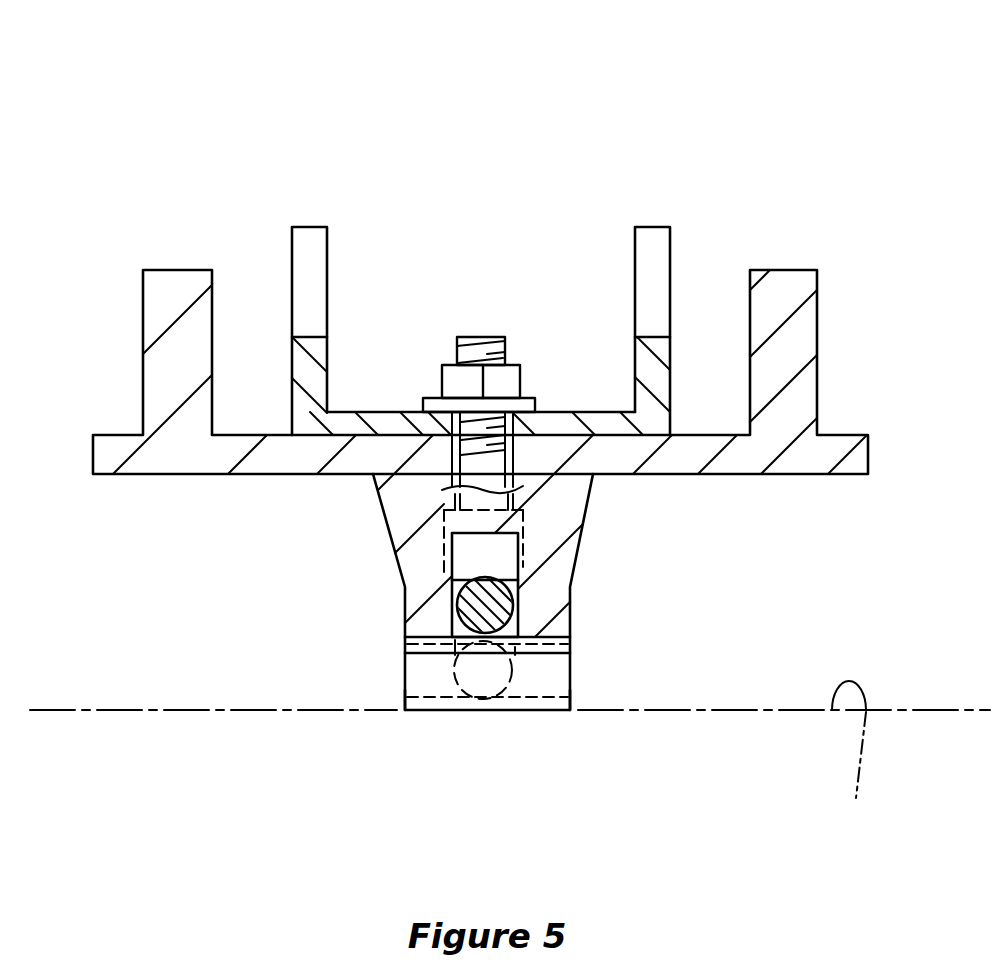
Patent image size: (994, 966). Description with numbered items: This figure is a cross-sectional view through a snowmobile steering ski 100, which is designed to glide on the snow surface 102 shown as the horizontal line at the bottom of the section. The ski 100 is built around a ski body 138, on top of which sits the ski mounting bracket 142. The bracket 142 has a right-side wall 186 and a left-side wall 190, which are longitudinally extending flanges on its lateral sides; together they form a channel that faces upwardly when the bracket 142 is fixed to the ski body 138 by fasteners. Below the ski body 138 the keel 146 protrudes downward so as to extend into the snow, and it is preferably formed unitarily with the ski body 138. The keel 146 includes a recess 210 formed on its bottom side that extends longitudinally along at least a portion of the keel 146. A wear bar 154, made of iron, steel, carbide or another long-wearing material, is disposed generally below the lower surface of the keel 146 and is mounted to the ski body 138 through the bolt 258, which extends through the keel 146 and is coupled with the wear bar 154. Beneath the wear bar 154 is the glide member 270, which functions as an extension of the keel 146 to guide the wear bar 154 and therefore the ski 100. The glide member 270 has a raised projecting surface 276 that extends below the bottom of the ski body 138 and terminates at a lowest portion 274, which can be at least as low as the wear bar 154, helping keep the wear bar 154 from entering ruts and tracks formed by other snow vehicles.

The front ski 100 is at (780, 152).
The snow surface 102 is at (510, 759).
The ski body 138 is at (714, 479).
The ski mounting bracket 142 is at (483, 331).
The keel 146 is at (502, 663).
The wear bar 154 is at (505, 606).
The right-side wall 186 is at (672, 353).
The left-side wall 190 is at (292, 392).
The recess 210 is at (518, 608).
The bolt 258 is at (482, 335).
The glide member 270 is at (411, 722).
The lowest portion of glide member 274 is at (553, 712).
The raised projecting surface 276 is at (535, 680).